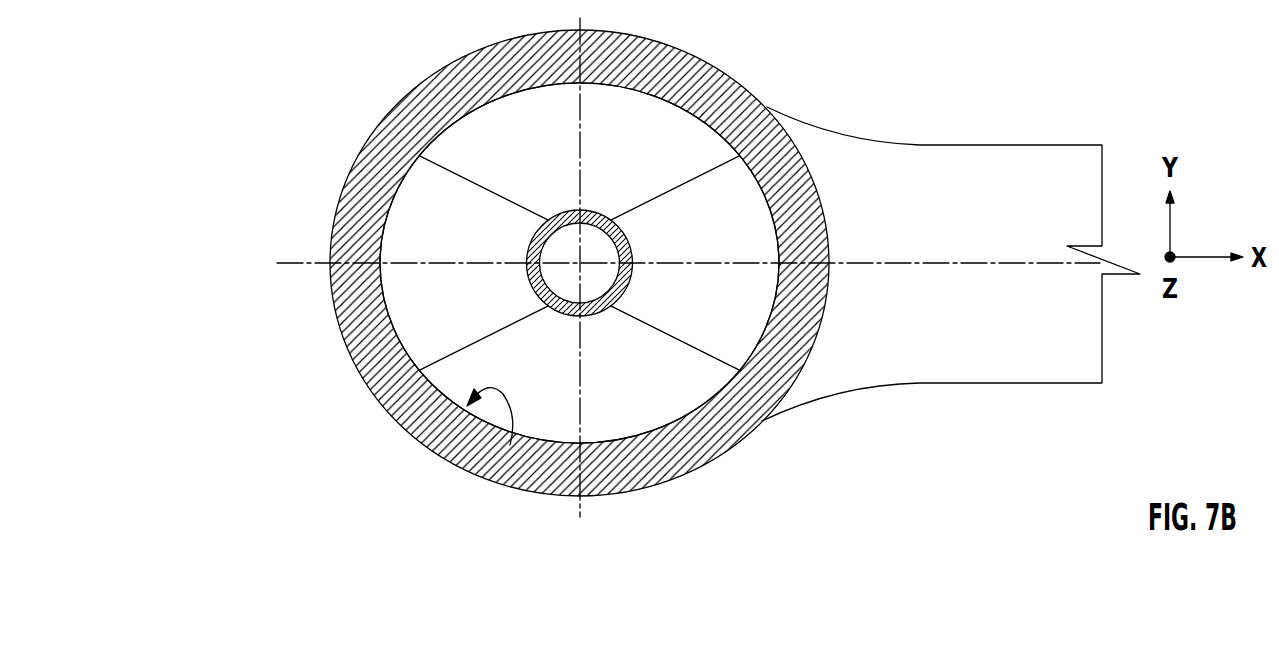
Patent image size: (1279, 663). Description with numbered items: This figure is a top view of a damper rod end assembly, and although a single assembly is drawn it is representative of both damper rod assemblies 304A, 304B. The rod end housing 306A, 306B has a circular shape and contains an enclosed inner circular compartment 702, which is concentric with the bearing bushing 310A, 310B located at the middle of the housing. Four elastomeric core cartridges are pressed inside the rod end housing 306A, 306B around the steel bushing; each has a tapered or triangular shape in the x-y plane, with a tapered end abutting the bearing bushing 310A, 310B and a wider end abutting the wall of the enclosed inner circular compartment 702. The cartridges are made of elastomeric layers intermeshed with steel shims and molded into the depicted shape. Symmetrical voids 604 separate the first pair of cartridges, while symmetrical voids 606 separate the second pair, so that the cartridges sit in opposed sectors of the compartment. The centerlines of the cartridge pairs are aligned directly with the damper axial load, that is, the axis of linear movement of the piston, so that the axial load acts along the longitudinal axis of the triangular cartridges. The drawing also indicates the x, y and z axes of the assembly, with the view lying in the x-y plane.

The damper rod assembly 304A is at (639, 281).
The damper rod assembly 304B is at (639, 281).
The rod end housing 306A is at (528, 263).
The rod end housing 306B is at (380, 405).
The bearing bushing 310A is at (471, 178).
The bearing bushing 310B is at (560, 213).
The symmetrical voids 604 is at (580, 279).
The symmetrical voids 606 is at (658, 150).
The inner circular compartment 702 is at (510, 445).